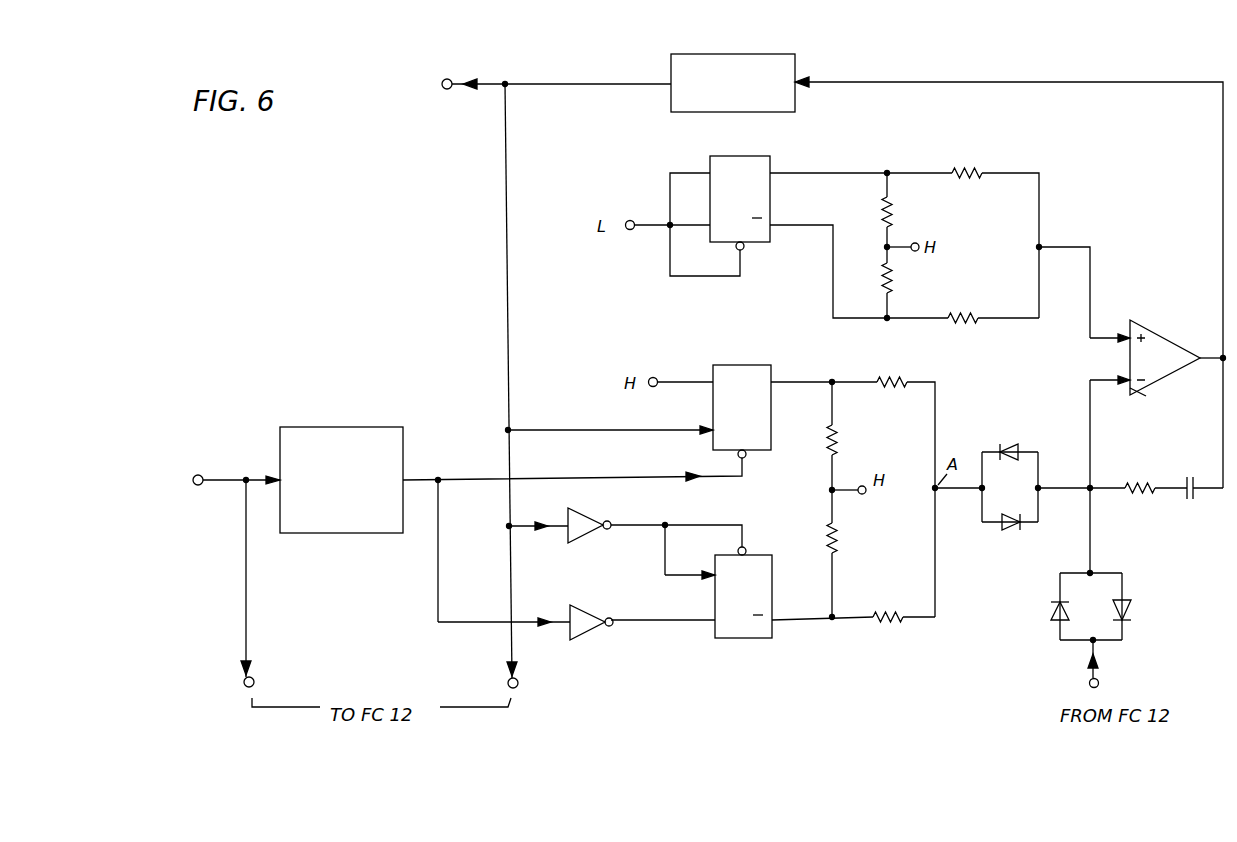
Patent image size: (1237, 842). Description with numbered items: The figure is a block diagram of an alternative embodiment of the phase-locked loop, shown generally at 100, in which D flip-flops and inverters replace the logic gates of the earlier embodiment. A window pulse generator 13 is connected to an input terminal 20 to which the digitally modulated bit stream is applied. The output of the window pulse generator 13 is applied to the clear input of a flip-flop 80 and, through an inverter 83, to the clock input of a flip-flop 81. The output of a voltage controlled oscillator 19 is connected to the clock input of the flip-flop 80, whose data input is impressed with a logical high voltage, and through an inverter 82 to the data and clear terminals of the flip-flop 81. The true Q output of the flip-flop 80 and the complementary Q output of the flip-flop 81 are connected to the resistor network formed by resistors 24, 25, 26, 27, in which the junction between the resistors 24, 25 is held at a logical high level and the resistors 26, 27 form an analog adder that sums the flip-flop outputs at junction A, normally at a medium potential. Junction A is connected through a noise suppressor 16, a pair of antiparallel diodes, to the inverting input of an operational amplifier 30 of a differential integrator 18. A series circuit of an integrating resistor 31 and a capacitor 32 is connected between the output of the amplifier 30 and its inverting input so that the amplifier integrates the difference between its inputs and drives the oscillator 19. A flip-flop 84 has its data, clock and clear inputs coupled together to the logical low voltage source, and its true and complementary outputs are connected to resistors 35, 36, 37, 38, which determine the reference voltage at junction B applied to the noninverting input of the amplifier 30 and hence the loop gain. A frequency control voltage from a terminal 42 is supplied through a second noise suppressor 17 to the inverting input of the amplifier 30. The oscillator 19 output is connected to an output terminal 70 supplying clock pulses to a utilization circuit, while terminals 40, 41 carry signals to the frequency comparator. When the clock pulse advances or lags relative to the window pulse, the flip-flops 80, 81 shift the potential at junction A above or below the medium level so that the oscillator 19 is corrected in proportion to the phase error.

The window pulse generator 13 is at (330, 427).
The noise suppressor 16 is at (1025, 422).
The noise suppressor 17 is at (1170, 604).
The differential integrator 18 is at (1191, 316).
The voltage controlled oscillator 19 is at (795, 63).
The input terminal 20 is at (198, 475).
The resistor 24 is at (836, 440).
The resistor 25 is at (838, 550).
The resistor 26 is at (893, 389).
The resistor 27 is at (893, 612).
The operational amplifier 30 is at (1148, 390).
The integrating resistor 31 is at (1140, 481).
The capacitor 32 is at (1193, 477).
The resistor 35 is at (890, 215).
The resistor 36 is at (890, 285).
The resistor 37 is at (968, 168).
The resistor 38 is at (958, 312).
The output terminal to frequency counter 40 is at (254, 677).
The output terminal to frequency counter 41 is at (509, 678).
The terminal 42 is at (1099, 683).
The output terminal 70 is at (444, 90).
The D flip-flop 80 is at (757, 365).
The D flip-flop 81 is at (772, 590).
The inverter 82 is at (585, 508).
The inverter 83 is at (588, 605).
The D flip-flop 84 is at (765, 157).
The phase-locked loop 100 is at (797, 722).